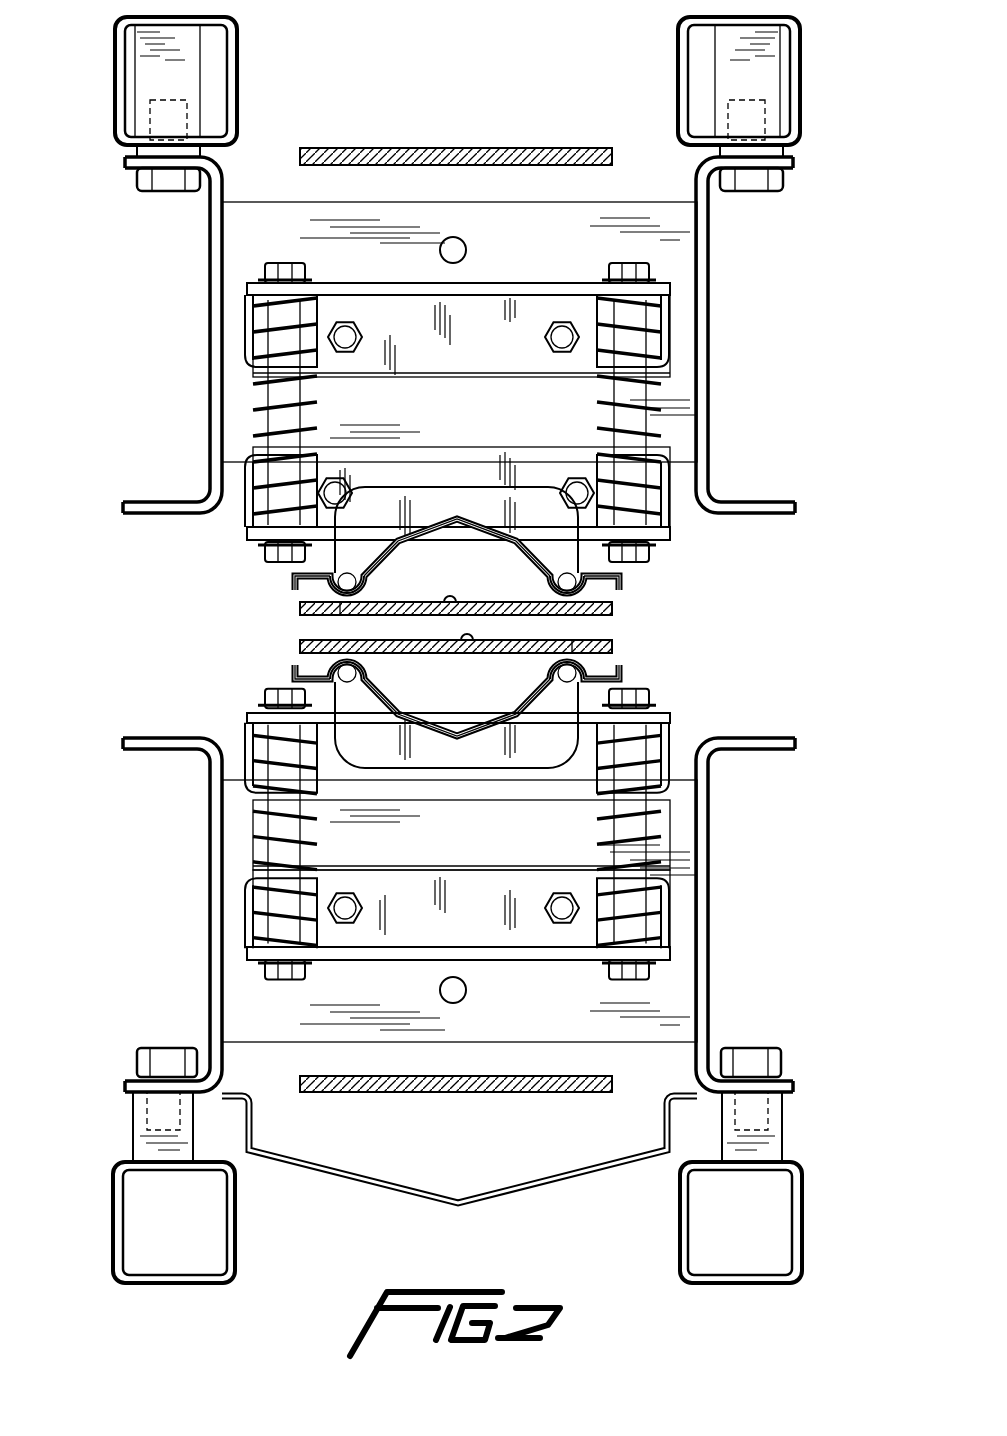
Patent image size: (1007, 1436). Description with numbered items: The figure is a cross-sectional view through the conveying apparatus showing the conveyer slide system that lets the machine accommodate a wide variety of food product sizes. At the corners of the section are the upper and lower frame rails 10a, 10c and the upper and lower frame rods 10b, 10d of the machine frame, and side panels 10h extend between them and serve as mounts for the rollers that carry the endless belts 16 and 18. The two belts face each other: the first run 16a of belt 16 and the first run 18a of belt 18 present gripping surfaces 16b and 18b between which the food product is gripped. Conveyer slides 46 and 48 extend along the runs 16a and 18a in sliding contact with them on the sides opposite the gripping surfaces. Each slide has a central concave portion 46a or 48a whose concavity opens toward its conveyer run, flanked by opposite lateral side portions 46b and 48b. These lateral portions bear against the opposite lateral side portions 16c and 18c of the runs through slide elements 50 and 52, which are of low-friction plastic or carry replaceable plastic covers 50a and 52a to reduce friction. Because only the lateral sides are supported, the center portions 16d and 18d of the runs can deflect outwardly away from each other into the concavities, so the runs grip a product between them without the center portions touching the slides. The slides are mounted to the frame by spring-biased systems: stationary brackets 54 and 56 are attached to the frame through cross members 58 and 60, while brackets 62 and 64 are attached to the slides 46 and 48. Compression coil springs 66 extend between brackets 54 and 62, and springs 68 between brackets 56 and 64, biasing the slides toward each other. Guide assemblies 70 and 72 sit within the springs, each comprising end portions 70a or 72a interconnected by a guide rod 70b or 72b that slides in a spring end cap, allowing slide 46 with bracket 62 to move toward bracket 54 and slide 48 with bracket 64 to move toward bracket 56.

The upper frame rail 10a is at (237, 40).
The upper frame rod 10b is at (678, 44).
The lower frame rail 10c is at (235, 1247).
The lower frame rod 10d is at (678, 1242).
The side panel 10h is at (210, 248).
The endless belt 16 is at (478, 148).
The first run 16a is at (612, 609).
The gripping surface 16b is at (310, 612).
The lateral side portion 16c is at (300, 608).
The center portion 16d is at (446, 599).
The endless belt 18 is at (447, 1094).
The first run 18a is at (613, 647).
The gripping surface 18b is at (614, 641).
The lateral side portion 18c is at (300, 648).
The center portion 18d is at (466, 640).
The conveyer slide 46 is at (625, 573).
The central concave portion 46a is at (440, 522).
The lateral side portion 46b is at (295, 580).
The conveyer slide 48 is at (625, 677).
The central concave portion 48a is at (447, 757).
The lateral side portion 48b is at (295, 680).
The slide element 50 is at (348, 574).
The replaceable plastic cover 50a is at (392, 557).
The slide element 52 is at (348, 684).
The replaceable plastic cover 52a is at (390, 698).
The stationary bracket 54 is at (528, 283).
The stationary bracket 56 is at (505, 940).
The cross member 58 is at (650, 228).
The cross member 60 is at (680, 862).
The bracket 62 is at (480, 447).
The bracket 64 is at (530, 792).
The spring 66 is at (300, 388).
The spring 68 is at (262, 832).
The guide assembly 70 is at (250, 318).
The end portion 70a is at (325, 307).
The guide rod 70b is at (285, 425).
The guide assembly 72 is at (255, 931).
The end portion 72a is at (255, 746).
The guide rod 72b is at (285, 832).